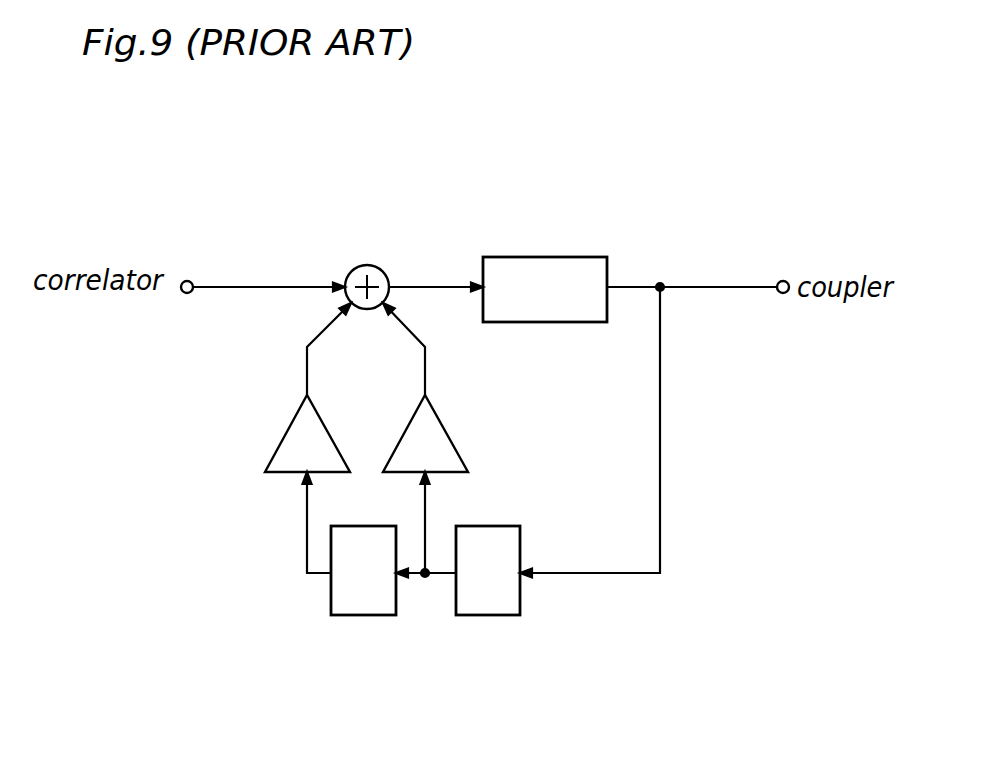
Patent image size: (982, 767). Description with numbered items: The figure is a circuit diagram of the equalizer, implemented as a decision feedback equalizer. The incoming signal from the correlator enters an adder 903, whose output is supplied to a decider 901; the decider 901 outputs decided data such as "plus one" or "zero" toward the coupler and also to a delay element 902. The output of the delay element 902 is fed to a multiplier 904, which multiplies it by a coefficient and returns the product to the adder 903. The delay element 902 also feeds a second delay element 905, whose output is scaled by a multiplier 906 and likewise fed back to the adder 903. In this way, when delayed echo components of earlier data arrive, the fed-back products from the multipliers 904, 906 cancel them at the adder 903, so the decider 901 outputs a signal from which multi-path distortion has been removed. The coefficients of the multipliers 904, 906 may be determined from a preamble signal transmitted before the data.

The decider 901 is at (543, 257).
The delay element 902 is at (485, 615).
The adder 903 is at (367, 265).
The multiplier 904 is at (445, 433).
The delay element 905 is at (362, 615).
The multiplier 906 is at (328, 433).